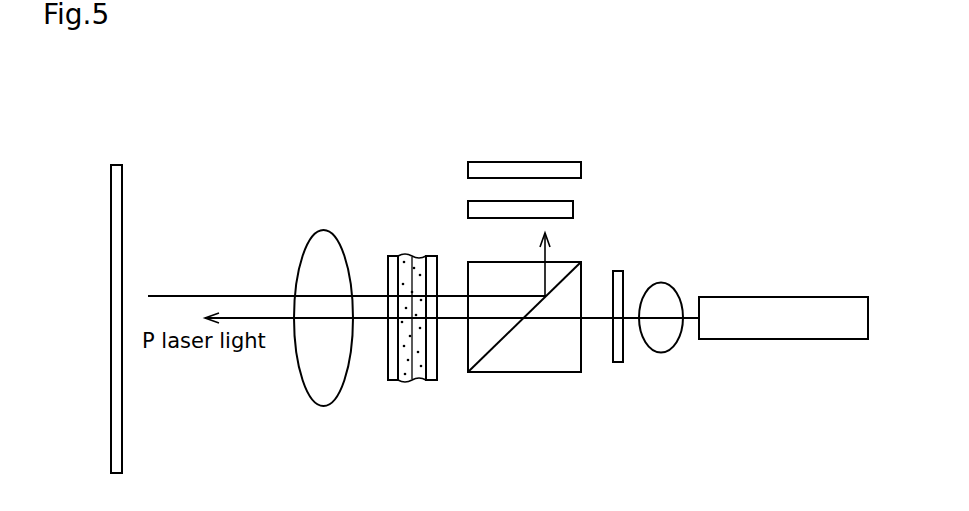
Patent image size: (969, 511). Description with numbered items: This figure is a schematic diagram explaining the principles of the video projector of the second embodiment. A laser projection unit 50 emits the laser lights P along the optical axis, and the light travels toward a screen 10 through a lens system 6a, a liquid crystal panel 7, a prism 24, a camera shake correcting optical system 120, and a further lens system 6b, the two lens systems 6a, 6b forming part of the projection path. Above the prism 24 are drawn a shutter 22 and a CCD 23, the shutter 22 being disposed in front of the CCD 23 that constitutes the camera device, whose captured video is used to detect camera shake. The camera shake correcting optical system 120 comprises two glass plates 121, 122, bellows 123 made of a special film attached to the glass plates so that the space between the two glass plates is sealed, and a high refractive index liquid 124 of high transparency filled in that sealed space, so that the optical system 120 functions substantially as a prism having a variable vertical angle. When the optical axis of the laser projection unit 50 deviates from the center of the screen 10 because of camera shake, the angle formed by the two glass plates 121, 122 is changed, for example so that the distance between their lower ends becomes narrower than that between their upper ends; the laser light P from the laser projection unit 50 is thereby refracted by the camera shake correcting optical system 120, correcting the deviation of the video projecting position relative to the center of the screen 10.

The screen 10 is at (118, 163).
The lens system 6a is at (669, 282).
The lens system 6b is at (328, 230).
The liquid crystal panel 7 is at (619, 364).
The shutter 22 is at (574, 203).
The CCD 23 is at (582, 164).
The prism 24 is at (558, 373).
The laser projection unit 50 is at (837, 296).
The camera shake correcting optical system 120 is at (382, 331).
The glass plate 121 is at (390, 384).
The glass plate 122 is at (431, 384).
The bellows 123 is at (405, 255).
The high refractive index liquid 124 is at (420, 253).